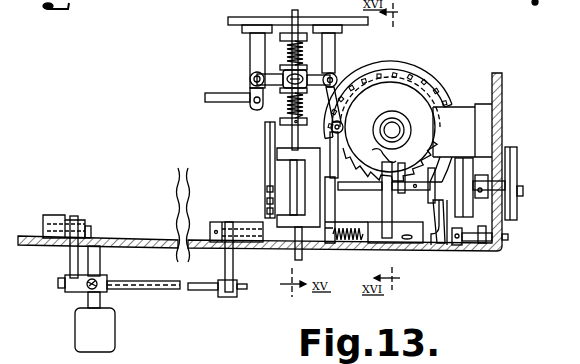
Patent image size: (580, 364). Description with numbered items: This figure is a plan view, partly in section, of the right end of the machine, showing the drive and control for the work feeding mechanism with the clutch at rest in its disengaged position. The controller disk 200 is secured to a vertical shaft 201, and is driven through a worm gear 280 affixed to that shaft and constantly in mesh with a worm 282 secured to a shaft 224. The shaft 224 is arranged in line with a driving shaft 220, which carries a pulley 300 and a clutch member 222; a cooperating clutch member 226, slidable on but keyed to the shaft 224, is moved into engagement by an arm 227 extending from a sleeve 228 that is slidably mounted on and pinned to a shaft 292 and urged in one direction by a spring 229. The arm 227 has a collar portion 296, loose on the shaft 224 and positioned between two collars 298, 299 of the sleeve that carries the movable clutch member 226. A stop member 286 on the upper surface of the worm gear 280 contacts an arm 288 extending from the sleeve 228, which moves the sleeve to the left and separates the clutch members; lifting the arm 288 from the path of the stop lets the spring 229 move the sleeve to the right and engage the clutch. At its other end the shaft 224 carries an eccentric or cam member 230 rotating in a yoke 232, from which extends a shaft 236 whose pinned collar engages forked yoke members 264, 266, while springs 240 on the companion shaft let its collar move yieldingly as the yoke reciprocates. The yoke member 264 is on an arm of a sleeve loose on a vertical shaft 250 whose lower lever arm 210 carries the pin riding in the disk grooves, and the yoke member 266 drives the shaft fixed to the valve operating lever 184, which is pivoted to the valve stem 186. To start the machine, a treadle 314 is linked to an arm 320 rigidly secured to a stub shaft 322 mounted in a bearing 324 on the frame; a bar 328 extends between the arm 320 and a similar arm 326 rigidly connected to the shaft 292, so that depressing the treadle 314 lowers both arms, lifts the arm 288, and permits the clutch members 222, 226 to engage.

The valve operating lever 184 is at (250, 96).
The valve stem 186 is at (212, 105).
The controller disk 200 is at (434, 73).
The vertical shaft 201 is at (392, 123).
The lever arm 210 is at (322, 120).
The driving shaft 220 is at (524, 191).
The clutch member 222 is at (476, 164).
The shaft 224 is at (377, 202).
The clutch member 226 is at (467, 249).
The arm 227 is at (433, 237).
The sleeve 228 is at (433, 243).
The spring 229 is at (344, 244).
The eccentric or cam member 230 is at (290, 172).
The yoke 232 is at (268, 214).
The shaft 236 is at (265, 138).
The springs 240 is at (283, 45).
The vertical shaft 250 is at (346, 62).
The yoke member 264 is at (330, 74).
The yoke member 266 is at (268, 68).
The worm gear 280 is at (450, 97).
The worm 282 is at (429, 124).
The stop member 286 is at (383, 157).
The arm 288 is at (382, 216).
The shaft 292 is at (508, 238).
The collar portion 296 is at (440, 170).
The collar 298 is at (430, 197).
The collar 299 is at (438, 206).
The pulley 300 is at (518, 213).
The treadle 314 is at (80, 322).
The arm 320 is at (70, 258).
The stub shaft 322 is at (92, 228).
The bearing 324 is at (55, 215).
The arm 326 is at (225, 263).
The bar 328 is at (145, 290).